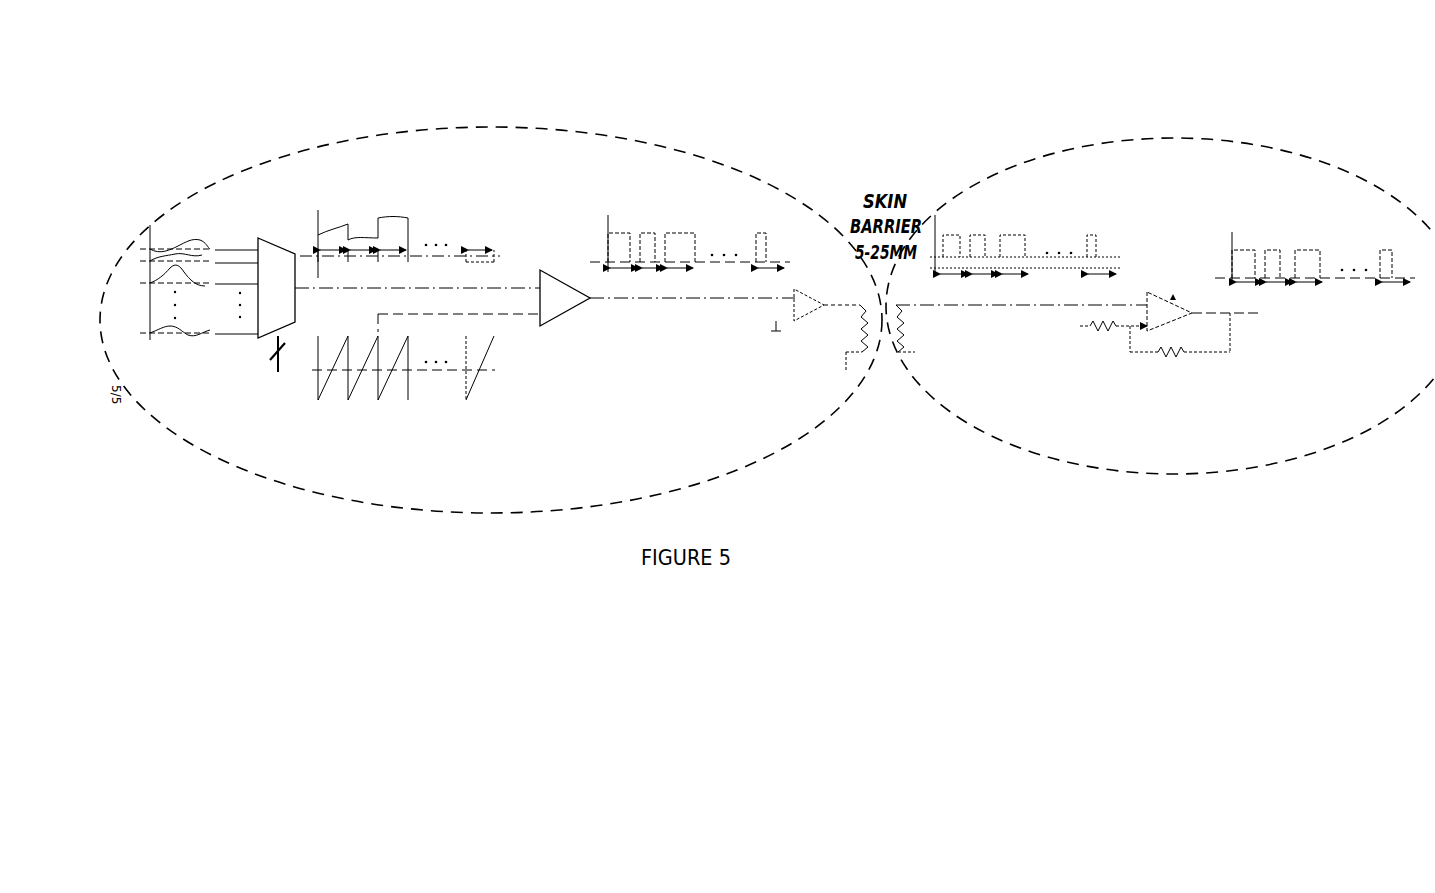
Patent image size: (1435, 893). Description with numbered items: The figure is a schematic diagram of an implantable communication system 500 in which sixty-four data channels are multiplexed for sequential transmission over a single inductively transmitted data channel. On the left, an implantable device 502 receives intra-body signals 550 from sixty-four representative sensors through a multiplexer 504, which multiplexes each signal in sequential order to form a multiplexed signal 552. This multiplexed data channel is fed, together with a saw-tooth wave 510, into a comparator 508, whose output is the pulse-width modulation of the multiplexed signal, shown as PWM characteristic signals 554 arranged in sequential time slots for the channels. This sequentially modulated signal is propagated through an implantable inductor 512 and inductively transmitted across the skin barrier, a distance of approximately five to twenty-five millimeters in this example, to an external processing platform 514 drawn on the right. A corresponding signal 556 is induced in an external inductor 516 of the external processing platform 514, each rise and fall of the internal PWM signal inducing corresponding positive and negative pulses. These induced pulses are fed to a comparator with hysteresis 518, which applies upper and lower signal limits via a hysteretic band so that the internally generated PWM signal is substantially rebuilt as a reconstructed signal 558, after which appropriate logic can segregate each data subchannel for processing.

The system 500 is at (397, 98).
The implantable device 502 is at (442, 127).
The multiplexer 504 is at (259, 238).
The comparator 508 is at (548, 266).
The saw-tooth wave 510 is at (368, 392).
The implantable inductor 512 is at (868, 343).
The external processing platform 514 is at (1070, 465).
The external inductor 516 is at (913, 338).
The comparator with hysteresis 518 is at (1160, 292).
The signals 550 is at (170, 168).
The multiplexed signal 552 is at (397, 192).
The PWM characteristic signals 554 is at (672, 222).
The signal 556 is at (1007, 214).
The reconstructed signal 558 is at (1255, 242).